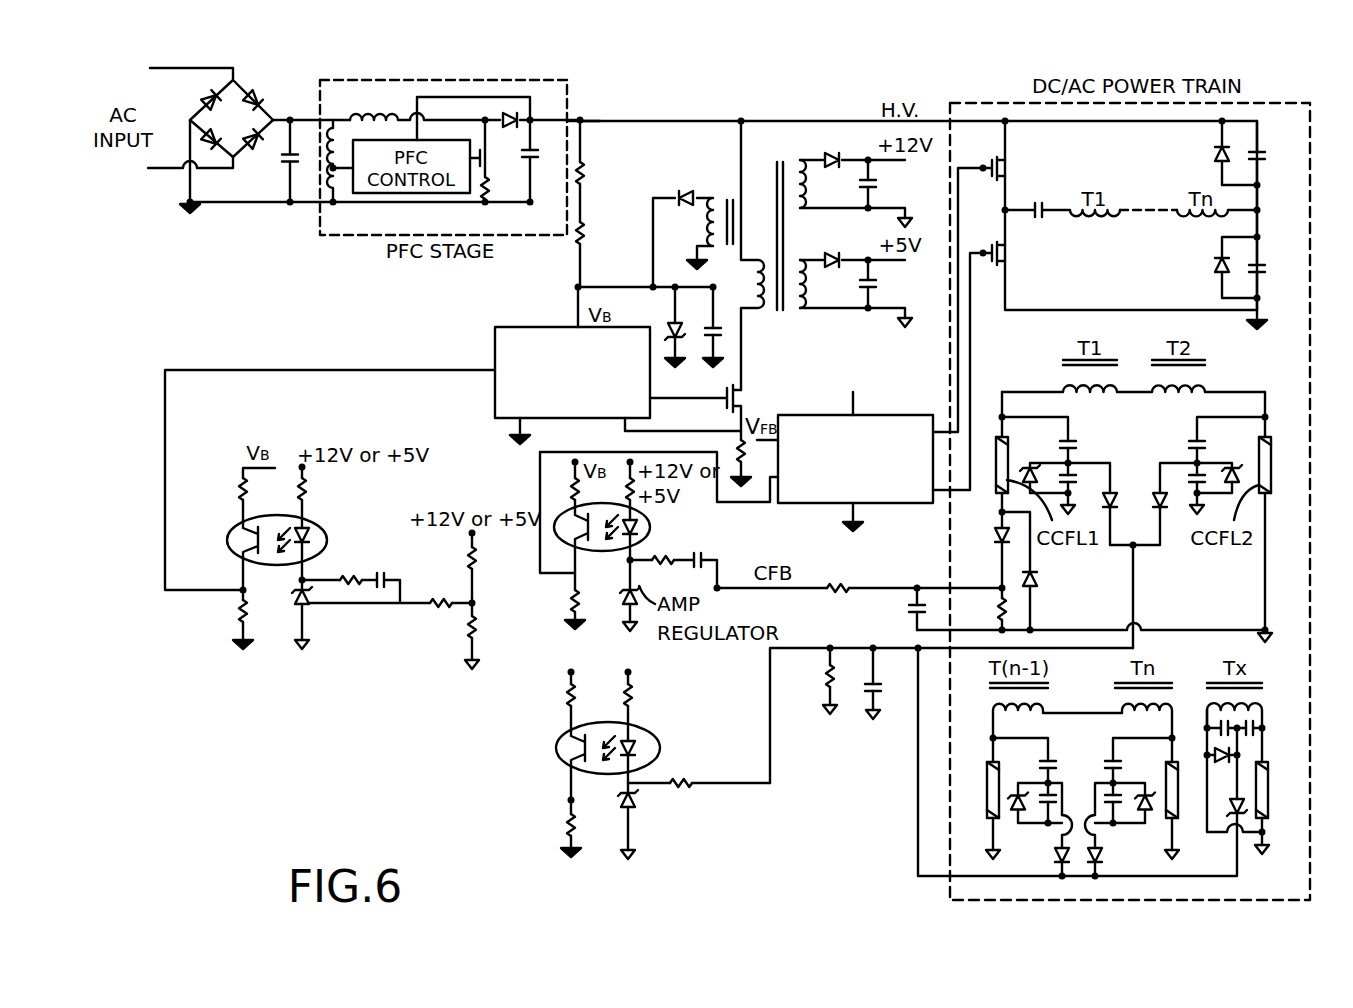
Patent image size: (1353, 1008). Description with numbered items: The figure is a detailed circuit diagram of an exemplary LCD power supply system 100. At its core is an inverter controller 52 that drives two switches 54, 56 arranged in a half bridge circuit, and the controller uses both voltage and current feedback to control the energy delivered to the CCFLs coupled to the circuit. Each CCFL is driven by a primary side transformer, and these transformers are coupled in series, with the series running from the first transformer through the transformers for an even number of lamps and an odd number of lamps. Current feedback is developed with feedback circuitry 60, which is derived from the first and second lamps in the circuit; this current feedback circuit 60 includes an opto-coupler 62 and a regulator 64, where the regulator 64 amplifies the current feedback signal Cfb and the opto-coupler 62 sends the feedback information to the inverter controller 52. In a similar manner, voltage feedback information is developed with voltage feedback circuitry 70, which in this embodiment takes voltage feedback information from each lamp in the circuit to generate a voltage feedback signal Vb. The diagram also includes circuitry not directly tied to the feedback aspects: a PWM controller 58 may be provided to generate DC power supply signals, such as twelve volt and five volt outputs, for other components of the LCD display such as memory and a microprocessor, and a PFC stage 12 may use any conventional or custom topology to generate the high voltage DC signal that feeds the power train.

The PFC stage 12 is at (570, 112).
The inverter controller 52 is at (832, 415).
The switch 54 is at (1005, 170).
The switch 56 is at (1005, 256).
The PWM controller 58 is at (553, 327).
The current feedback circuitry 60 is at (682, 551).
The opto-coupler 62 is at (651, 531).
The regulator 64 is at (625, 585).
The voltage feedback circuitry 70 is at (660, 733).
The LCD power supply system 100 is at (249, 334).